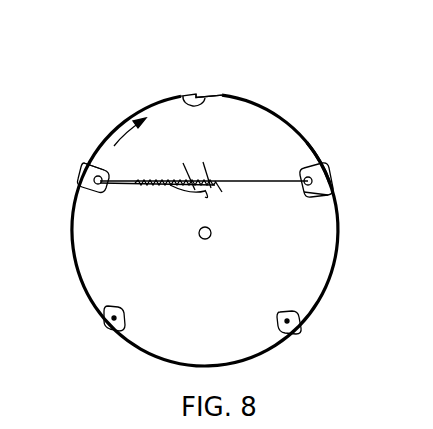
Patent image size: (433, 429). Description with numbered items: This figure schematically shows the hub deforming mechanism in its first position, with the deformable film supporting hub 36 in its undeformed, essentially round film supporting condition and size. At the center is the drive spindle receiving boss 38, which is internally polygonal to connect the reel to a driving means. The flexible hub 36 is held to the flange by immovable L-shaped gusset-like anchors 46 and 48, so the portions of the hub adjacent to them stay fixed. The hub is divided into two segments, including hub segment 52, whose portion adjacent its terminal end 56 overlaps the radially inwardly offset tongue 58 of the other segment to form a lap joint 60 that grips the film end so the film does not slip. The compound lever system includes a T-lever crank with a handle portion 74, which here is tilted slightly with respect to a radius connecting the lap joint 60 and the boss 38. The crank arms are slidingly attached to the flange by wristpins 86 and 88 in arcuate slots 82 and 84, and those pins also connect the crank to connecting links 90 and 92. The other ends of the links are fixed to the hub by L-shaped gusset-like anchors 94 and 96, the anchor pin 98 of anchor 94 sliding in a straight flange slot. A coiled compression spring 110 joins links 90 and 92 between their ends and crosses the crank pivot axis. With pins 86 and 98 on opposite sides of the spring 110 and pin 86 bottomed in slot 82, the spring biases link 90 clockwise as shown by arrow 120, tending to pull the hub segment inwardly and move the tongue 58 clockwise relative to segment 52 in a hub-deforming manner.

The deformable film supporting hub 36 is at (272, 100).
The drive spindle receiving boss 38 is at (198, 238).
The L-shaped gusset-like anchor 46 is at (108, 320).
The L-shaped gusset-like anchor 48 is at (295, 328).
The hub segment 52 is at (306, 142).
The terminal end 56 is at (210, 94).
The tongue 58 is at (179, 93).
The lap joint 60 is at (222, 92).
The handle portion 74 is at (205, 197).
The arcuate slot 82 is at (185, 172).
The arcuate slot 84 is at (220, 192).
The wristpin 86 is at (182, 192).
The wristpin 88 is at (212, 182).
The connecting link 90 is at (120, 185).
The connecting link 92 is at (318, 192).
The L-shaped gusset-like anchor 94 is at (83, 163).
The L-shaped gusset-like anchor 96 is at (318, 175).
The anchor pin 98 is at (93, 162).
The coiled compression spring 110 is at (152, 182).
The arrow 120 is at (98, 160).